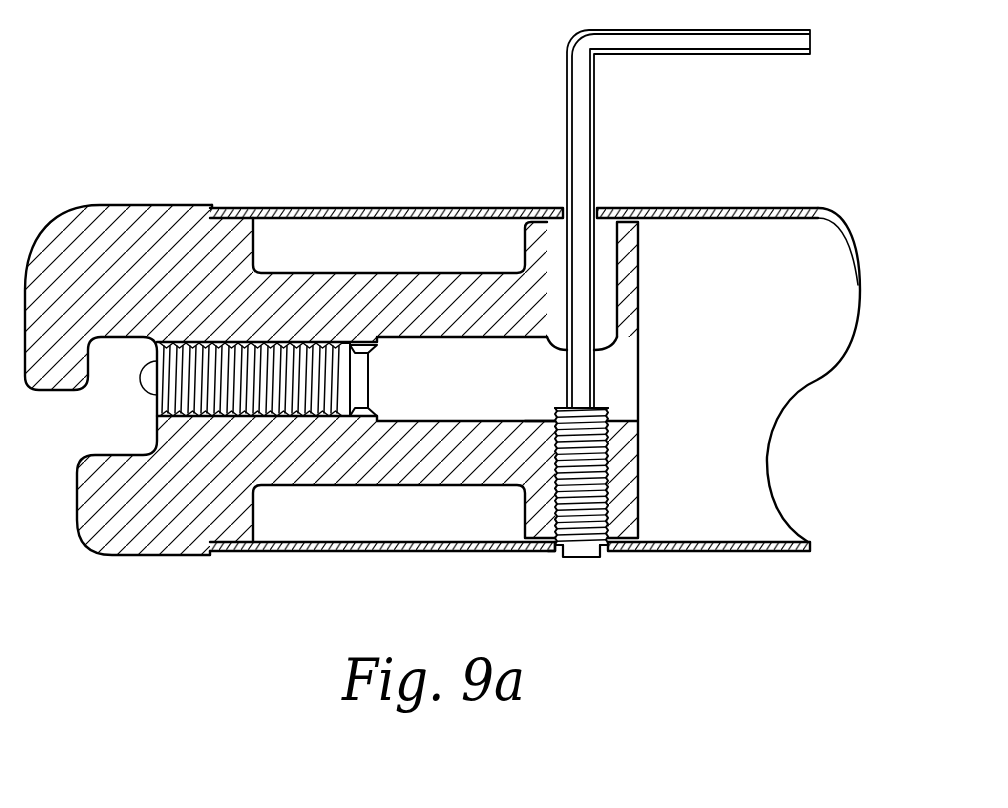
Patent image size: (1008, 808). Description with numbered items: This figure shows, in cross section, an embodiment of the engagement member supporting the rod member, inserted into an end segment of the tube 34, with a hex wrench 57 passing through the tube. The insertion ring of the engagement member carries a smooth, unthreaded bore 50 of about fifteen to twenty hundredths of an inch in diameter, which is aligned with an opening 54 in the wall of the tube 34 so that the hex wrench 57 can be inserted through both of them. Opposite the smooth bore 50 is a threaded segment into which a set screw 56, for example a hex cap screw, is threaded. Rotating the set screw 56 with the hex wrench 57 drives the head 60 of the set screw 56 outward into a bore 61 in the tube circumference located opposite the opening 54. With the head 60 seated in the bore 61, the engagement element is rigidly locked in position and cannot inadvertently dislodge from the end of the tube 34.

The tube 34 is at (411, 207).
The bore 50 is at (610, 275).
The opening 54 is at (597, 208).
The set screw 56 is at (598, 463).
The hex wrench 57 is at (697, 55).
The head of the set screw 60 is at (590, 558).
The bore 61 is at (556, 555).